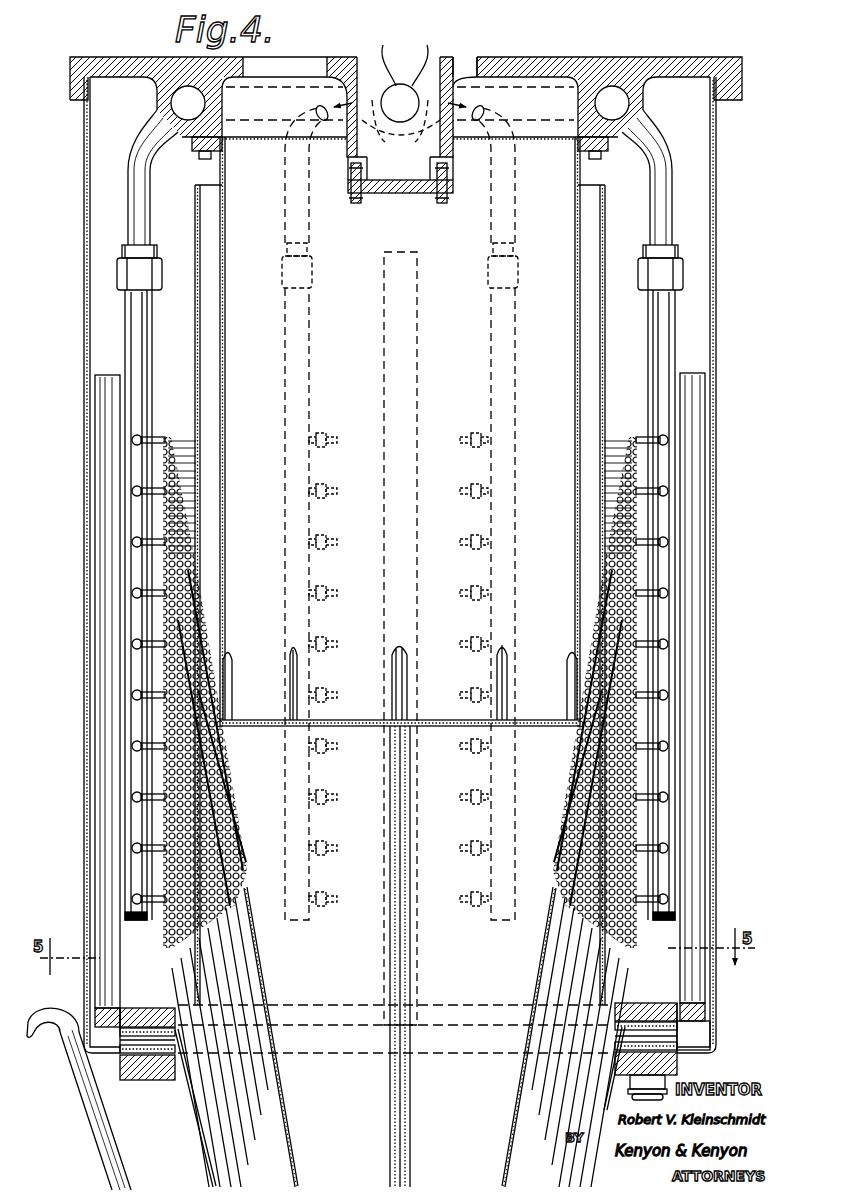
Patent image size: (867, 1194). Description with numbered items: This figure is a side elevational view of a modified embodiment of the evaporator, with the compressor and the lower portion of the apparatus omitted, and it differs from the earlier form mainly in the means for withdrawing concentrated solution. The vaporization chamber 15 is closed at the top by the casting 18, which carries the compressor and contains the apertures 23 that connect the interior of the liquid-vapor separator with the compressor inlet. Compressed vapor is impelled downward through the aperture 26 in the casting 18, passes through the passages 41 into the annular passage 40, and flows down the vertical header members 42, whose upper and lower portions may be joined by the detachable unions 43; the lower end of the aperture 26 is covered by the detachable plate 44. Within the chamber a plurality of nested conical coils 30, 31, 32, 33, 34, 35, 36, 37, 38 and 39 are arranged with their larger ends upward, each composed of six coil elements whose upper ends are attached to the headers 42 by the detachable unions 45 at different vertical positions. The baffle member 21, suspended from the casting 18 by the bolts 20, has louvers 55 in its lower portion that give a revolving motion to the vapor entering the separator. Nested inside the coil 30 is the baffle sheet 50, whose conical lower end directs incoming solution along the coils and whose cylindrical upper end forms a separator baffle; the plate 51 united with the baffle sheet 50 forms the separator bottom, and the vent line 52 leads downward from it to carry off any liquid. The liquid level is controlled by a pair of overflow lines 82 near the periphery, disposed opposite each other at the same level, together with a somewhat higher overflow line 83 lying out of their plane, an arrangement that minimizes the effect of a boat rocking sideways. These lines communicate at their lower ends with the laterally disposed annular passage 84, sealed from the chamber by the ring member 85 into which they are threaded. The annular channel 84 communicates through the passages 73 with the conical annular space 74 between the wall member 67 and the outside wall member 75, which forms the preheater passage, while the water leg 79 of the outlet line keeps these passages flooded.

The vaporization chamber 15 is at (718, 206).
The casting or mounting plate 18 is at (608, 57).
The bolts 20 is at (600, 152).
The baffle member 21 is at (576, 228).
The apertures 23 is at (556, 60).
The aperture 26 is at (436, 62).
The conical coil 30 is at (160, 452).
The conical coil 31 is at (160, 505).
The conical coil 32 is at (160, 556).
The conical coil 33 is at (160, 605).
The conical coil 34 is at (160, 657).
The conical coil 35 is at (160, 708).
The conical coil 36 is at (160, 760).
The conical coil 37 is at (160, 811).
The conical coil 38 is at (160, 862).
The conical coil 39 is at (160, 914).
The annular passage 40 is at (630, 103).
The passages 41 is at (402, 118).
The vertical header members 42 is at (508, 356).
The detachable unions 43 is at (318, 274).
The detachable plate 44 is at (451, 190).
The detachable unions 45 is at (524, 432).
The baffle sheet 50 is at (606, 258).
The plate 51 is at (478, 720).
The vent line 52 is at (402, 942).
The louvers 55 is at (405, 668).
The wall member 67 is at (627, 1092).
The passages 73 is at (150, 1045).
The conical annular space 74 is at (627, 1080).
The outside wall member 75 is at (630, 1097).
The water leg 79 is at (79, 1099).
The overflow lines 82 is at (103, 403).
The overflow line 83 is at (408, 420).
The annular passage 84 is at (695, 1033).
The ring member 85 is at (667, 1004).